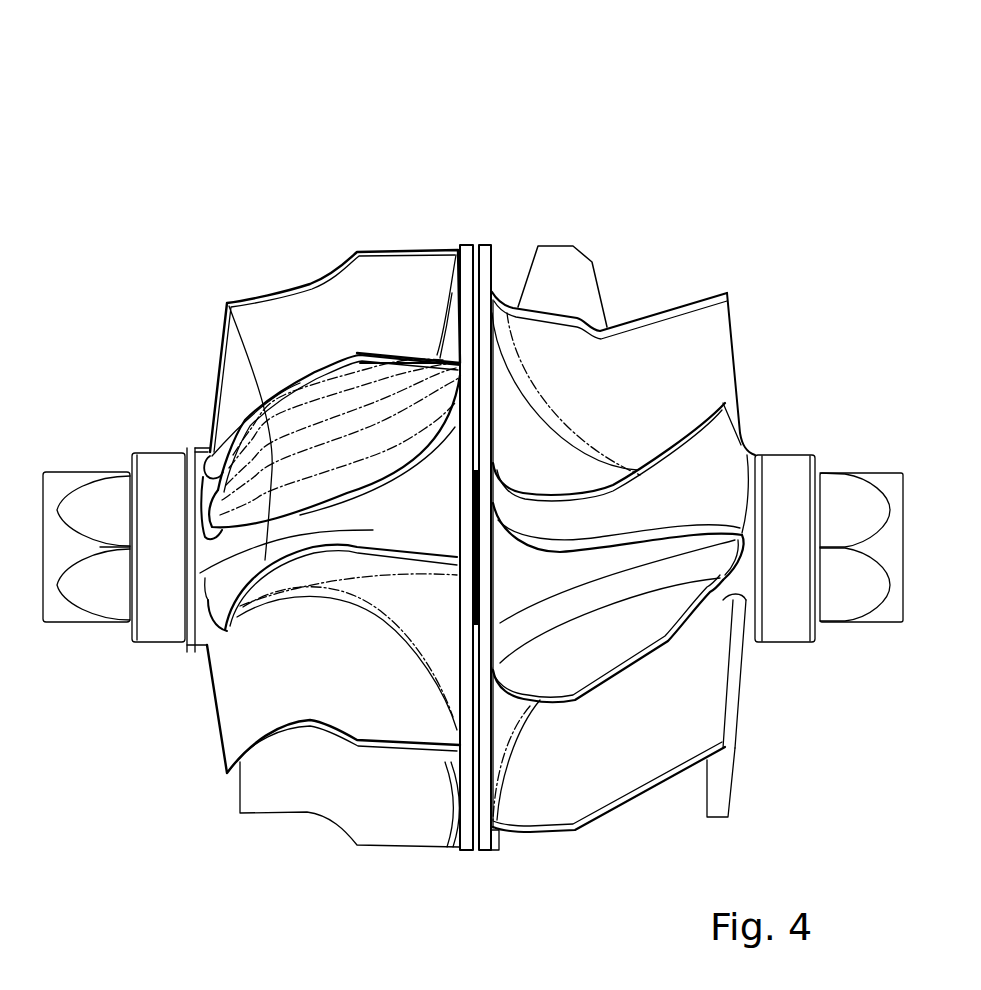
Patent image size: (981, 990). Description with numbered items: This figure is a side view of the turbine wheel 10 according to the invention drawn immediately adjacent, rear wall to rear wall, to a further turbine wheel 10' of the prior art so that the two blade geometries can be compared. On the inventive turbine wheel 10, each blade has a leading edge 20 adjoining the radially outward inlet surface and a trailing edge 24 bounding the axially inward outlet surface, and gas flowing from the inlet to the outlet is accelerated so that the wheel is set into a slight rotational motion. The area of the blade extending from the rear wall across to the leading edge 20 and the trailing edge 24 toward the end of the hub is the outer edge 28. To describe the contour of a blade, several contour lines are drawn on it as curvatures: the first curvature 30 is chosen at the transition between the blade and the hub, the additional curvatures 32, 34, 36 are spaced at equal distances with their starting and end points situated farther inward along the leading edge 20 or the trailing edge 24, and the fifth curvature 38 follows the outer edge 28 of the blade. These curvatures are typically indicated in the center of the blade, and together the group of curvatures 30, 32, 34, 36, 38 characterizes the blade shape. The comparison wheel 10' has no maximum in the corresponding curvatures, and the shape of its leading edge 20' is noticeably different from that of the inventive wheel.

The turbine wheel 10 is at (261, 429).
The further turbine wheel 10' is at (691, 442).
The leading edge 20 is at (334, 317).
The leading edge 20' is at (623, 505).
The trailing edge 24 is at (212, 395).
The outer edge 28 is at (229, 303).
The first curvature 30 is at (335, 482).
The second curvature 32 is at (215, 596).
The third curvature 34 is at (216, 380).
The fourth curvature 36 is at (276, 432).
The fifth curvature 38 is at (299, 404).